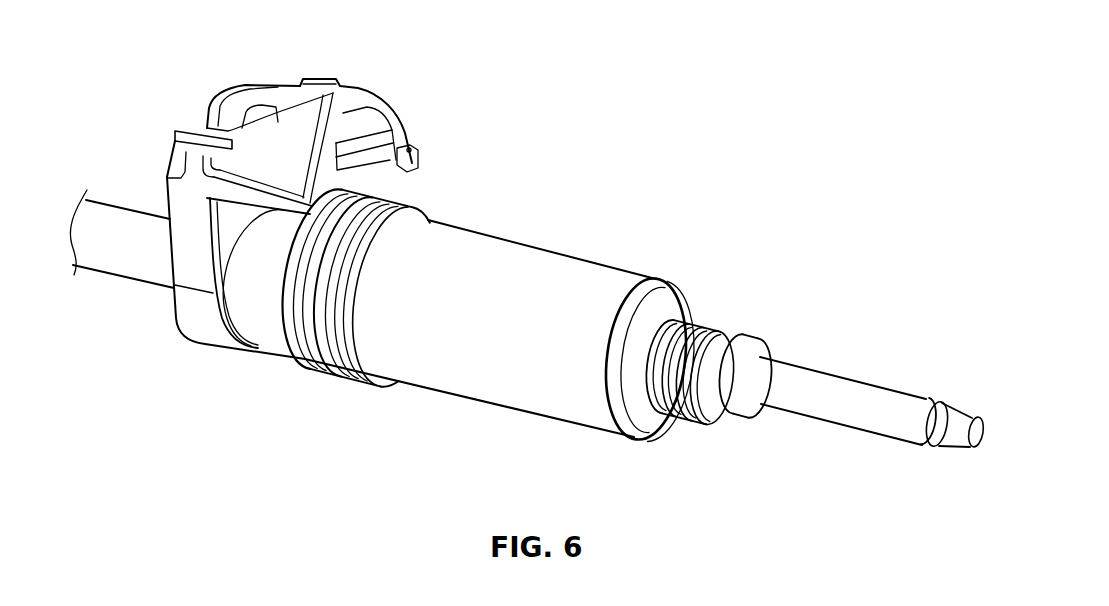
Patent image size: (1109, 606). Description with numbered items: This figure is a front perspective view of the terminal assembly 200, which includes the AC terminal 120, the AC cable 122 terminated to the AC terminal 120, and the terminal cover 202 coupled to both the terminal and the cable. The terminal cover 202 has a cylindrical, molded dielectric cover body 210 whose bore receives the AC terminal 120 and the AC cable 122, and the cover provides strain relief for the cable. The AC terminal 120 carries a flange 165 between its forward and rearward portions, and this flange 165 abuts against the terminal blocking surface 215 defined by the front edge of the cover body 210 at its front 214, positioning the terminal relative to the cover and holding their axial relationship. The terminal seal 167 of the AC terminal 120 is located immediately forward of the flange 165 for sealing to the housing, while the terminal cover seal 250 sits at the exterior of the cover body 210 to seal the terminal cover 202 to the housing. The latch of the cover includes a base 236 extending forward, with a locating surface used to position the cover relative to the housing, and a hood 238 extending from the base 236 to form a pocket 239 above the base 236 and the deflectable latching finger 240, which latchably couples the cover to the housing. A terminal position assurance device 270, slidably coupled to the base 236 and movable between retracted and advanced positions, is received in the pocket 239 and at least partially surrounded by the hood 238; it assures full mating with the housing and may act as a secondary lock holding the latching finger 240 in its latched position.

The terminal assembly 200 is at (556, 117).
The terminal cover 202 is at (555, 240).
The AC terminal 120 is at (883, 382).
The AC cable 122 is at (137, 270).
The flange 165 is at (676, 298).
The terminal seal 167 is at (725, 330).
The cover body 210 is at (480, 378).
The front 214 is at (637, 440).
The terminal blocking surface 215 is at (665, 277).
The base 236 is at (226, 203).
The hood 238 is at (372, 98).
The pocket 239 is at (387, 123).
The latching finger 240 is at (383, 168).
The terminal cover seal 250 is at (323, 362).
The terminal position assurance (TPA) device 270 is at (227, 95).